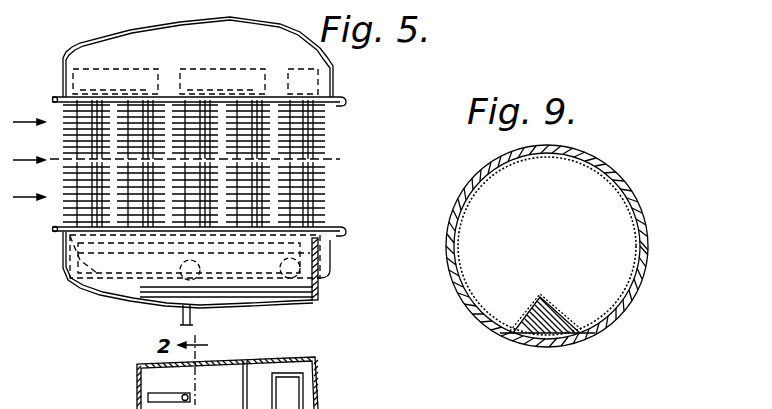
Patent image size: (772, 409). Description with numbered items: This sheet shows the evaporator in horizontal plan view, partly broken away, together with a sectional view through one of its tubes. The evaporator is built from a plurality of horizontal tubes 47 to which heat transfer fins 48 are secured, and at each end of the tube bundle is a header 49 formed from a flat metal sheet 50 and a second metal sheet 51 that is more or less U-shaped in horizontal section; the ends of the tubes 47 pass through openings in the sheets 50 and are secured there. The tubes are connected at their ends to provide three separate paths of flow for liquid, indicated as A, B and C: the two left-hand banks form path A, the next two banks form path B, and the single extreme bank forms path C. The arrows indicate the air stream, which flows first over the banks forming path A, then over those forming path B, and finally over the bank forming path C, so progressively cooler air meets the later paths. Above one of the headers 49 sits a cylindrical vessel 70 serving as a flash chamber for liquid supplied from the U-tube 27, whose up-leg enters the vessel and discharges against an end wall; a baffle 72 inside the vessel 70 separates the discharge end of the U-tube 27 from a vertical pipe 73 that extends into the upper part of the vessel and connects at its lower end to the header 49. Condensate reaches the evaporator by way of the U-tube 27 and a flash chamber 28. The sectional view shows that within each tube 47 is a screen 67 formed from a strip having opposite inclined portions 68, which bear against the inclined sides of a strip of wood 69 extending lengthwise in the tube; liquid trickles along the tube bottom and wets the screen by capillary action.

In FIG. 5, the second metal sheet 51 is at (114, 35).
In FIG. 5, the flat metal sheet 50 is at (340, 107).
In FIG. 5, the header 49 is at (197, 103).
In FIG. 5, the horizontal tube 47 is at (322, 117).
In FIG. 9, the horizontal tube 47 is at (648, 236).
In FIG. 5, the heat transfer fin 48 is at (320, 197).
In FIG. 5, the first path of flow A is at (143, 107).
In FIG. 5, the second path of flow B is at (245, 105).
In FIG. 5, the third path of flow C is at (298, 105).
In FIG. 5, the vertical pipe 73 is at (300, 266).
In FIG. 5, the cylindrical vessel 70 is at (314, 301).
In FIG. 5, the flash chamber 28 is at (322, 376).
In FIG. 5, the baffle 72 is at (244, 372).
In FIG. 5, the U-tube 27 is at (192, 318).
In FIG. 9, the screen 67 is at (623, 195).
In FIG. 9, the inclined portion 68 is at (523, 301).
In FIG. 9, the strip of wood 69 is at (545, 334).